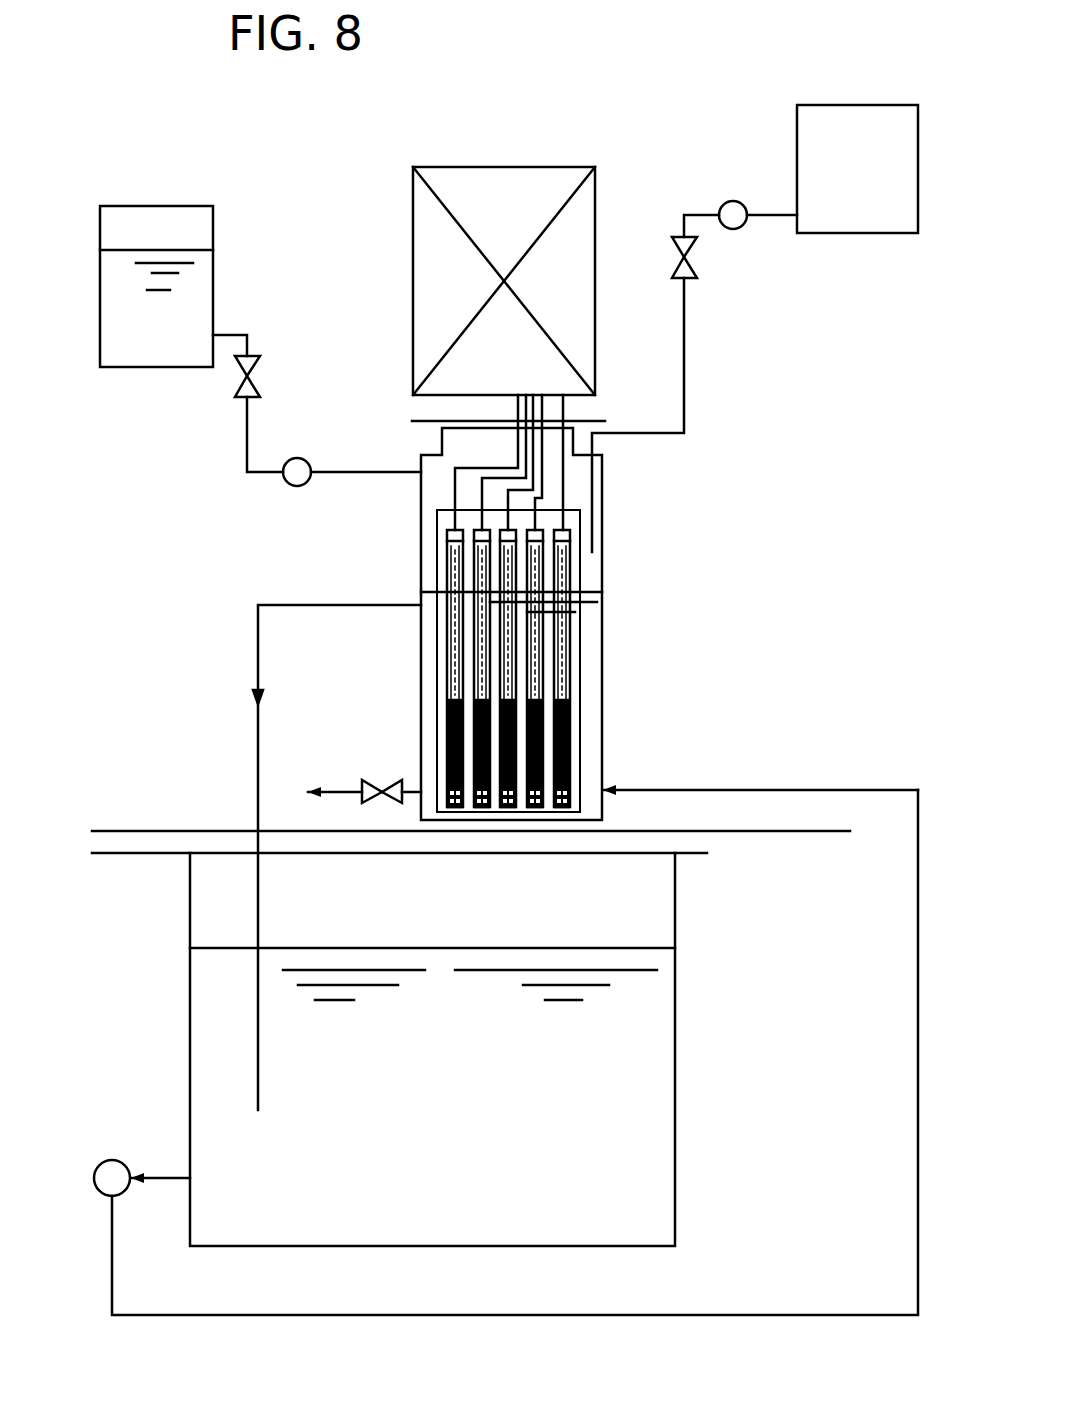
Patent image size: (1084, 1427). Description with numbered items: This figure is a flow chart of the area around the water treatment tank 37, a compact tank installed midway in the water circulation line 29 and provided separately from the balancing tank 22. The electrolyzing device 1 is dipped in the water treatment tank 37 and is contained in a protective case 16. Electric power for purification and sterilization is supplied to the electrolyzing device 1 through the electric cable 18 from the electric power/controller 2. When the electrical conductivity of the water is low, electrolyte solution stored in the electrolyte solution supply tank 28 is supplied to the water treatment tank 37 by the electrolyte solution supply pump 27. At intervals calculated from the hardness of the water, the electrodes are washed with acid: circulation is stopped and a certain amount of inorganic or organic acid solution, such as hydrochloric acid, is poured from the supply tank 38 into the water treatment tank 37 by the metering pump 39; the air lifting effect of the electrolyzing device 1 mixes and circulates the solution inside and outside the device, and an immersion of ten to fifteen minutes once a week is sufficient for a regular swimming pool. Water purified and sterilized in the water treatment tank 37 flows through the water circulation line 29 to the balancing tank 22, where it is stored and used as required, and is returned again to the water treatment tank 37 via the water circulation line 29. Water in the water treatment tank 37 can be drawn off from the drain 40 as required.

The electrolyzing device 1 is at (576, 728).
The electric power/controller 2 is at (475, 167).
The protective case 16 is at (598, 776).
The electric cable 18 is at (566, 483).
The balancing tank 22 is at (678, 1065).
The electrolyte solution supply pump 27 is at (729, 200).
The electrolyte solution supply tank 28 is at (861, 105).
The water circulation line 29 is at (257, 604).
The water treatment tank 37 is at (618, 492).
The inorganic acid or organic acid solution supply tank 38 is at (216, 248).
The metering pump 39 is at (303, 456).
The drain 40 is at (361, 773).